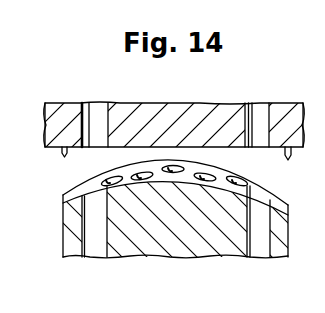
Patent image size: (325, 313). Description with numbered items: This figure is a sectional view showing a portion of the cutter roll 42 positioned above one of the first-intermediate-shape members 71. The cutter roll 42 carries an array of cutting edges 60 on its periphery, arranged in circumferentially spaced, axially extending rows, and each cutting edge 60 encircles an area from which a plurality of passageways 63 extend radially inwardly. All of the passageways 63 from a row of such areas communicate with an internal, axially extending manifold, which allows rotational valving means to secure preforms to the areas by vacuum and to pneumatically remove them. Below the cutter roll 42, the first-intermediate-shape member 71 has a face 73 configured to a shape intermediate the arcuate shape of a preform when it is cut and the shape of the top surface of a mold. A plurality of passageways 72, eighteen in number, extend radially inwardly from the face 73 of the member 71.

The cutter roll 42 is at (165, 112).
The passageways 63 is at (98, 112).
The cutting edges 60 is at (62, 158).
The first-intermediate-shape member 71 is at (63, 232).
The passageways 72 is at (232, 178).
The face 73 is at (148, 166).